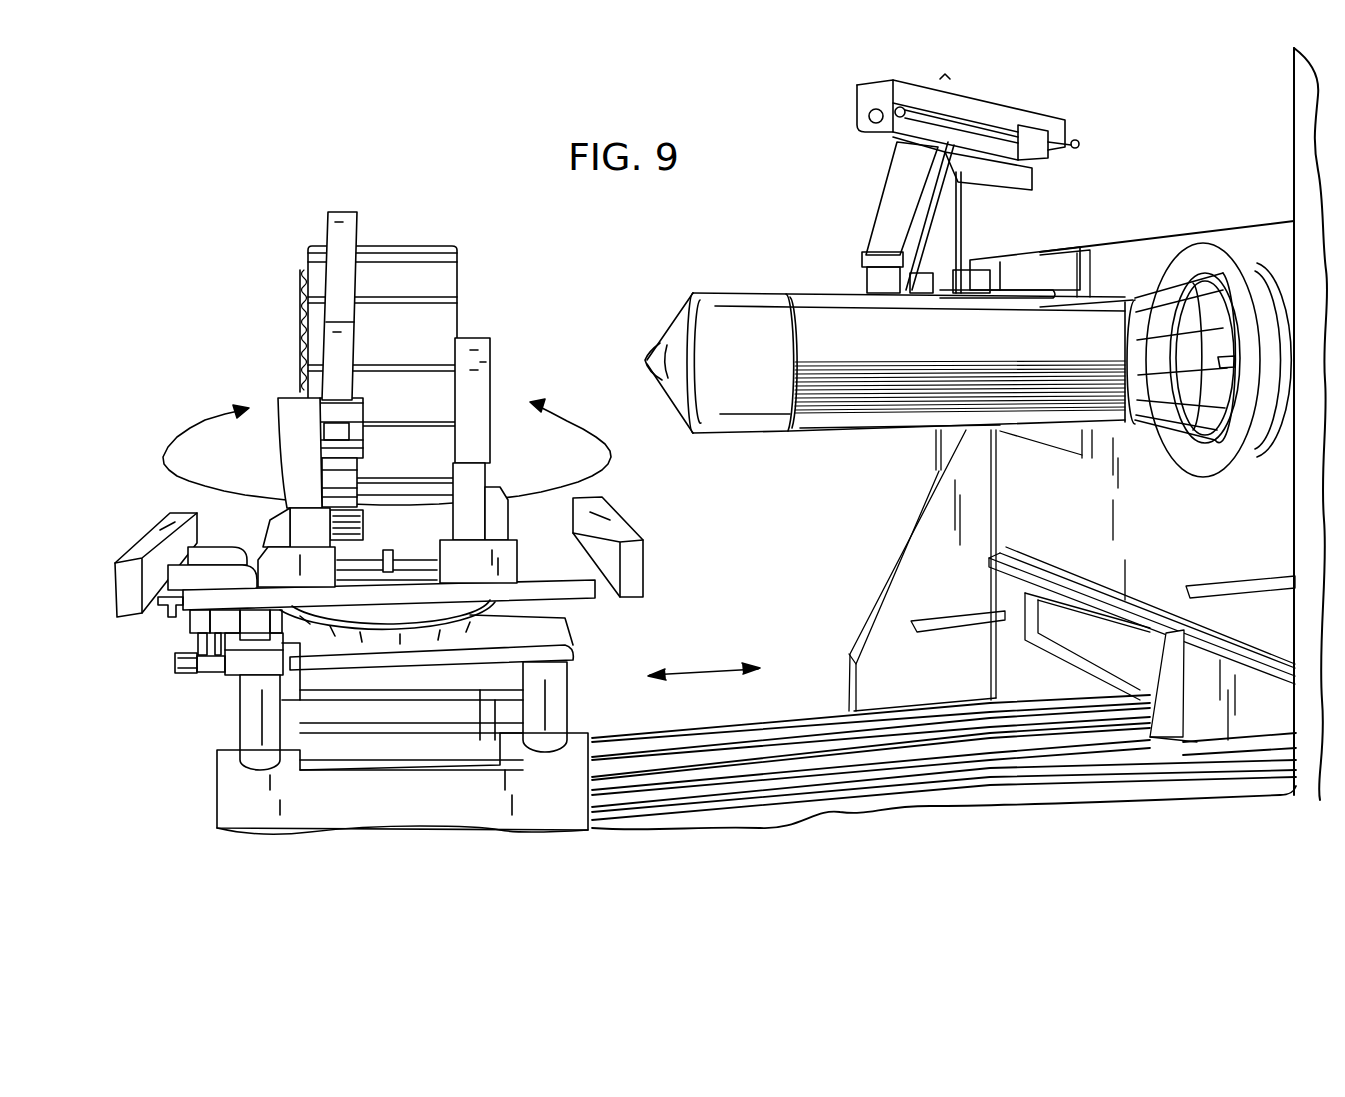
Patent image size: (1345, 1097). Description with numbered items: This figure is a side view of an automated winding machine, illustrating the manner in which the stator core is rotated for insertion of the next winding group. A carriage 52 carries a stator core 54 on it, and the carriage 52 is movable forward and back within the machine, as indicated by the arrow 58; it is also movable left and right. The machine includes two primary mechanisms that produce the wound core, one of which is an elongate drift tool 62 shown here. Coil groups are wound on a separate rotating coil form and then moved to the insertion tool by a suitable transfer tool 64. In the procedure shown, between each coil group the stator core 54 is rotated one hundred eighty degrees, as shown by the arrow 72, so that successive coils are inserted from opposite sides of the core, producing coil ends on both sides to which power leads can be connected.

The carriage 52 is at (650, 505).
The stator core 54 is at (416, 246).
The arrow 58 is at (698, 667).
The elongate drift tool 62 is at (731, 266).
The transfer tool 64 is at (882, 176).
The arrow 72 is at (190, 430).